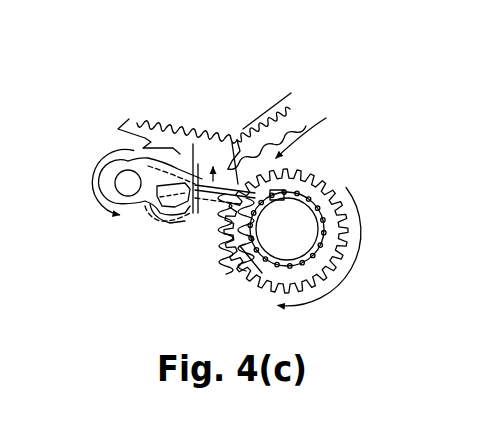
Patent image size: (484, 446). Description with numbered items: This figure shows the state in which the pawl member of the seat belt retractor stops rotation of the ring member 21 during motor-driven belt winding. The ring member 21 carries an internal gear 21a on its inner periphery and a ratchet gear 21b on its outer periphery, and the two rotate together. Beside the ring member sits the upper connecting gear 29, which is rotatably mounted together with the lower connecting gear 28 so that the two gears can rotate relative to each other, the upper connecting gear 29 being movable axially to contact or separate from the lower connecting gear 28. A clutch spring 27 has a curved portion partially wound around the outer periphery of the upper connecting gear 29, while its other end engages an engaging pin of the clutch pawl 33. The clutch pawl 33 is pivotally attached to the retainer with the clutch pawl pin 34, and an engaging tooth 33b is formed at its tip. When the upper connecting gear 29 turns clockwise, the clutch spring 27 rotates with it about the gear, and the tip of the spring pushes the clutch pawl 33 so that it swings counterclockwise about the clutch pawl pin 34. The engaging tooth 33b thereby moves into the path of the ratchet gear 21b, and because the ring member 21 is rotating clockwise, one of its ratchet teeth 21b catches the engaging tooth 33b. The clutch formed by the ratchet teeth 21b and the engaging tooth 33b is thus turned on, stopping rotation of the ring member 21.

The ring member 21 is at (146, 124).
The internal gear 21a is at (193, 143).
The ratchet gear 21b is at (140, 138).
The clutch spring 27 is at (185, 238).
The lower connecting gear 28 is at (247, 264).
The upper connecting gear 29 is at (238, 240).
The clutch pawl 33 is at (103, 172).
The engaging tooth 33b is at (200, 140).
The clutch pawl pin 34 is at (121, 181).